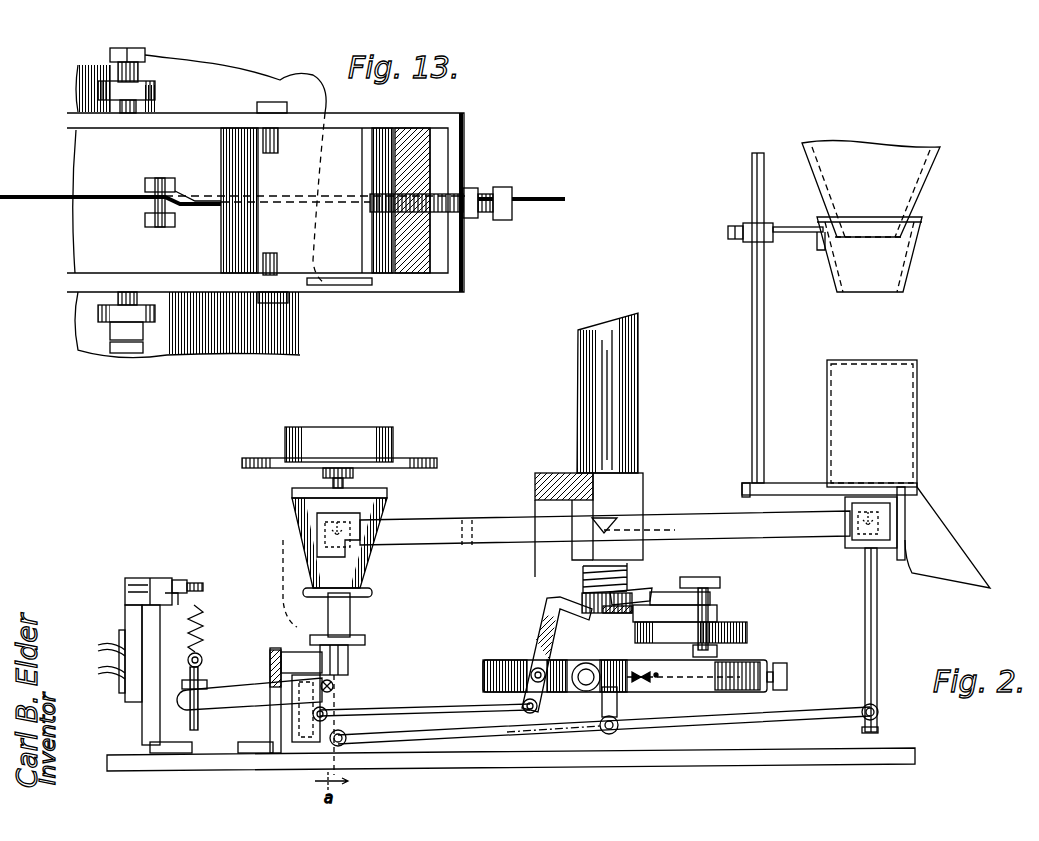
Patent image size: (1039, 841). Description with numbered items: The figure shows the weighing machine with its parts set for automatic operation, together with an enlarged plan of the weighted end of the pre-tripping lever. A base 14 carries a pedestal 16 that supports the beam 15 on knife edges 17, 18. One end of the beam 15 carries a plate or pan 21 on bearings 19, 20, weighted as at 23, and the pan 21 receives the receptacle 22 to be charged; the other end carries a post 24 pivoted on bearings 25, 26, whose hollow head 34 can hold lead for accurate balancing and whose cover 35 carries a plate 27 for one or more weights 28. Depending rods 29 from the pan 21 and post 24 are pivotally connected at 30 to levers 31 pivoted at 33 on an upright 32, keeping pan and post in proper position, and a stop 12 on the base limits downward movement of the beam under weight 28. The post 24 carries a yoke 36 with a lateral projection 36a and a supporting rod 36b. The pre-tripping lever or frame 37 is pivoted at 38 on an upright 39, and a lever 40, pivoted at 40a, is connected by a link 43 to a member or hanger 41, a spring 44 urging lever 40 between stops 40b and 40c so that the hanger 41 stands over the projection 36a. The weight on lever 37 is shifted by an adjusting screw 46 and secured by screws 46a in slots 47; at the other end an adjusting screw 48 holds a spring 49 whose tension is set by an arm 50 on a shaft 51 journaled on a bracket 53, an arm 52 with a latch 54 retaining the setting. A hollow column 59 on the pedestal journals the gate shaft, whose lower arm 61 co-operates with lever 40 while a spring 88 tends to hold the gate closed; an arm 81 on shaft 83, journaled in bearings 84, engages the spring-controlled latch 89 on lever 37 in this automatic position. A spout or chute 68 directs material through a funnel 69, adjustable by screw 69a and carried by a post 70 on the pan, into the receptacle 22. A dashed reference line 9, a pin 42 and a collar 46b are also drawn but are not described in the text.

In FIG. 2, the axis line 9 is at (272, 487).
In FIG. 2, the stop 12 is at (300, 650).
In FIG. 2, the base 14 is at (840, 753).
In FIG. 2, the beam 15 is at (448, 520).
In FIG. 2, the pedestal 16 is at (589, 525).
In FIG. 2, the knife edge 17 is at (614, 520).
In FIG. 2, the knife edge 18 is at (653, 528).
In FIG. 2, the bearing 19 is at (905, 520).
In FIG. 2, the bearing 20 is at (905, 545).
In FIG. 2, the plate or pan 21 is at (917, 487).
In FIG. 2, the receptacle 22 is at (895, 402).
In FIG. 2, the weight 23 is at (968, 545).
In FIG. 2, the post 24 is at (345, 684).
In FIG. 2, the bearing 25 is at (360, 535).
In FIG. 2, the bearing 26 is at (368, 555).
In FIG. 2, the plate 27 is at (432, 453).
In FIG. 2, the weight 28 is at (348, 428).
In FIG. 2, the depending rod 29 is at (347, 712).
In FIG. 2, the pivot 30 is at (347, 742).
In FIG. 13, the lever 31 is at (288, 188).
In FIG. 2, the lever 31 is at (473, 735).
In FIG. 13, the upright 32 is at (162, 178).
In FIG. 13, the pivot 33 is at (176, 190).
In FIG. 2, the pivot 33 is at (605, 727).
In FIG. 2, the hollow head 34 is at (365, 580).
In FIG. 2, the cover 35 is at (747, 632).
In FIG. 2, the yoke 36 is at (270, 678).
In FIG. 2, the lateral projection 36a is at (315, 735).
In FIG. 2, the supporting rod 36b is at (320, 631).
In FIG. 13, the lever or frame 37 is at (400, 292).
In FIG. 2, the lever or frame 37 is at (478, 665).
In FIG. 13, the pivot 38 is at (155, 92).
In FIG. 2, the pivot 38 is at (600, 655).
In FIG. 13, the upright 39 is at (145, 53).
In FIG. 2, the upright 39 is at (596, 703).
In FIG. 2, the lever 40 is at (550, 617).
In FIG. 2, the pivot 40a is at (528, 672).
In FIG. 2, the stop 40b is at (552, 660).
In FIG. 2, the stop 40c is at (527, 663).
In FIG. 2, the member or hanger 41 is at (342, 700).
In FIG. 2, the pin 42 is at (333, 685).
In FIG. 2, the link 43 is at (407, 708).
In FIG. 2, the spring 44 is at (483, 690).
In FIG. 13, the adjusting screw 46 is at (502, 188).
In FIG. 2, the adjusting screw 46 is at (787, 672).
In FIG. 13, the screw 46a is at (282, 113).
In FIG. 2, the collar 46b is at (638, 692).
In FIG. 13, the slot 47 is at (325, 113).
In FIG. 2, the slot 47 is at (627, 692).
In FIG. 2, the adjusting screw 48 is at (202, 660).
In FIG. 2, the spring 49 is at (215, 627).
In FIG. 2, the arm 50 is at (182, 580).
In FIG. 2, the shaft 51 is at (160, 578).
In FIG. 2, the arm 52 is at (125, 617).
In FIG. 2, the bracket 53 is at (189, 663).
In FIG. 2, the latch 54 is at (105, 663).
In FIG. 2, the hollow column 59 is at (640, 410).
In FIG. 2, the arm 61 is at (647, 593).
In FIG. 2, the spout or chute 68 is at (918, 193).
In FIG. 2, the funnel 69 is at (920, 248).
In FIG. 2, the screw 69a is at (736, 239).
In FIG. 2, the post 70 is at (765, 368).
In FIG. 2, the arm 81 is at (717, 650).
In FIG. 2, the shaft 83 is at (710, 610).
In FIG. 2, the bearing 84 is at (700, 656).
In FIG. 2, the spring 88 is at (552, 568).
In FIG. 13, the spring controlled latch 89 is at (355, 287).